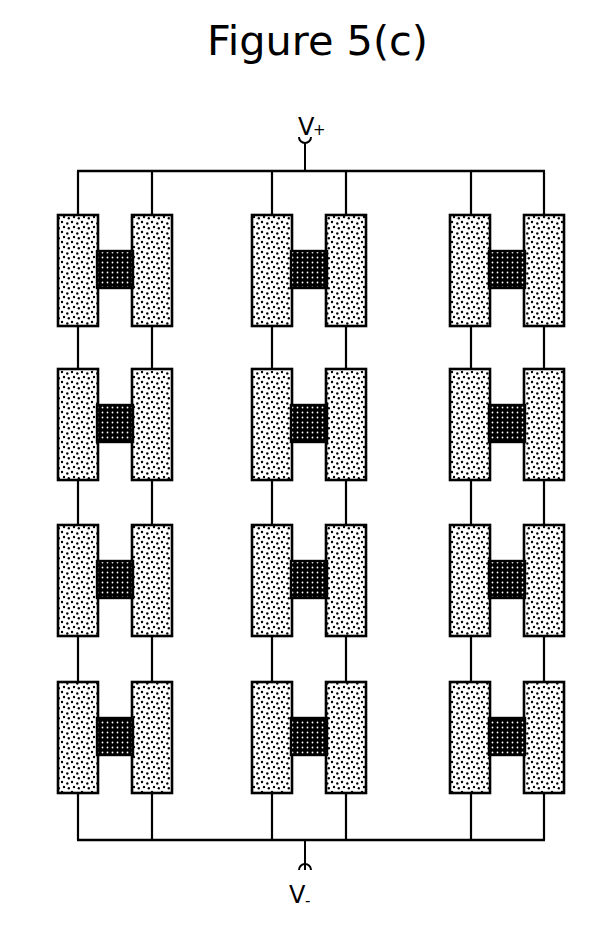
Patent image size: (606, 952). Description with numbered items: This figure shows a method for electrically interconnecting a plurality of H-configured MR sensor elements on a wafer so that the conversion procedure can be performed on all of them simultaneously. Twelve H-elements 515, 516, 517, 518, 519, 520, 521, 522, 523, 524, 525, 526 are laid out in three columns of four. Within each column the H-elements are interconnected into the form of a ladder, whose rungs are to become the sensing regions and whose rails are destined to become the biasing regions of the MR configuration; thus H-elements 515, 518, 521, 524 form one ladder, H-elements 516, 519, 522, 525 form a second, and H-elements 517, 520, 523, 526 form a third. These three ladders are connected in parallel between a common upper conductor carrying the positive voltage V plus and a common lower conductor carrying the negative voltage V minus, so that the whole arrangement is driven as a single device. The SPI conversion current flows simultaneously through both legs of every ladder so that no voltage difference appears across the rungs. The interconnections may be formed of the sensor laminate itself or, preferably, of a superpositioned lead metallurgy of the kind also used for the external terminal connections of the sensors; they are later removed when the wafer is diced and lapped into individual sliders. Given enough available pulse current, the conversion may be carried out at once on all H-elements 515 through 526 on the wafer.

The H-element 515 is at (58, 245).
The H-element 516 is at (252, 245).
The H-element 517 is at (450, 245).
The H-element 518 is at (58, 399).
The H-element 519 is at (252, 399).
The H-element 520 is at (450, 399).
The H-element 521 is at (58, 555).
The H-element 522 is at (252, 555).
The H-element 523 is at (450, 555).
The H-element 524 is at (58, 712).
The H-element 525 is at (252, 712).
The H-element 526 is at (450, 712).